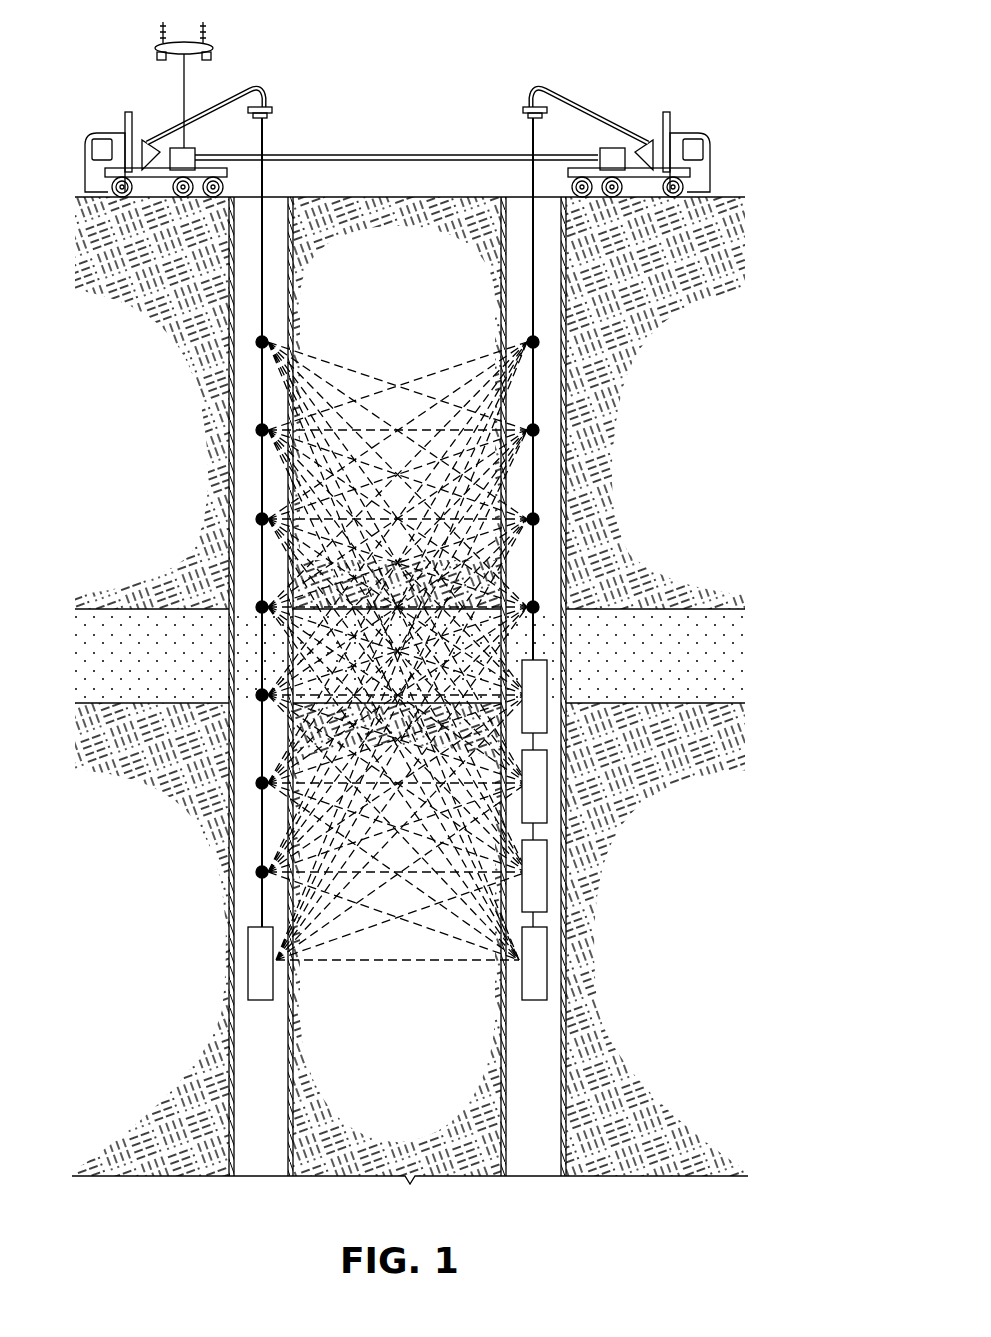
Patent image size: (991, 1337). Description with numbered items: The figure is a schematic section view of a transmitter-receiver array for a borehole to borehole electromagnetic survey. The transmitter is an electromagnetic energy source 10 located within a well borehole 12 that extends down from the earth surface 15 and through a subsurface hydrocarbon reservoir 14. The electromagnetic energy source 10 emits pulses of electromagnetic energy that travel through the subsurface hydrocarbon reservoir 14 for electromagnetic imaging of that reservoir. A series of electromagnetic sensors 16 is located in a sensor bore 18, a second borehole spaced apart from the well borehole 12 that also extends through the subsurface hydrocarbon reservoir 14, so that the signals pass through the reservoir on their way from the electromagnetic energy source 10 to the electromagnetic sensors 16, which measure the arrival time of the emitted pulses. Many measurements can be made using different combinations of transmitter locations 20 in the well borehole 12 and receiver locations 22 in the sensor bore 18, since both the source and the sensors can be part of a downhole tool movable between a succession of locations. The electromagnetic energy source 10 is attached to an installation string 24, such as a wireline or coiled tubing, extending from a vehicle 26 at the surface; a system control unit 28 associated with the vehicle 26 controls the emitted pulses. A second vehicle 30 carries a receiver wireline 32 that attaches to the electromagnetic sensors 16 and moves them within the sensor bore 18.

The electromagnetic energy source 10 is at (250, 965).
The well borehole 12 is at (242, 880).
The subsurface hydrocarbon reservoir 14 is at (708, 650).
The earth surface 15 is at (727, 197).
The electromagnetic sensors 16 is at (547, 877).
The sensor bore 18 is at (552, 383).
The transmitter locations 20 is at (258, 518).
The receiver locations 22 is at (536, 519).
The installation string 24 is at (260, 405).
The vehicle 26 is at (266, 70).
The system control unit 28 is at (160, 42).
The second vehicle 30 is at (704, 113).
The receiver wireline 32 is at (533, 293).